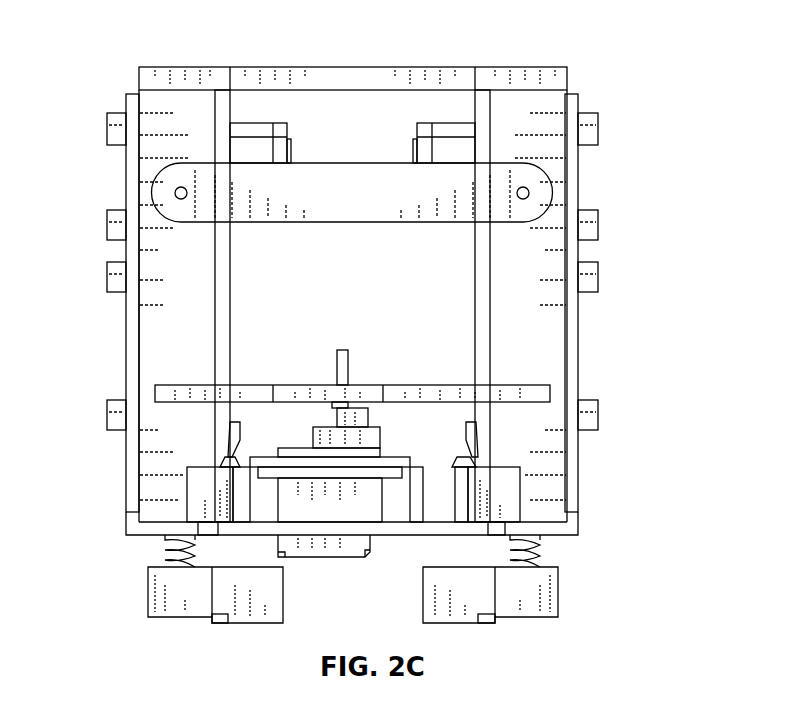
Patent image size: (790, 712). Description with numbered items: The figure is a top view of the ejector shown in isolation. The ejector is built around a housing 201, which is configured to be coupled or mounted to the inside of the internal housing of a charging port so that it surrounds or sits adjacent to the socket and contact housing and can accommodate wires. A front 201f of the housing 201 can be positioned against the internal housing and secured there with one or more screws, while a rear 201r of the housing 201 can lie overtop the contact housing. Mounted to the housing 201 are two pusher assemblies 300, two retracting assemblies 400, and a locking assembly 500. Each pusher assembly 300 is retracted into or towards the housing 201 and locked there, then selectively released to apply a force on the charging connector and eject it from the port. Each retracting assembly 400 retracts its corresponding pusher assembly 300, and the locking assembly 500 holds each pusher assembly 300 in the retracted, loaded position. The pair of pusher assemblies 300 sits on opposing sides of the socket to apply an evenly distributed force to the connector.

The housing 201 is at (162, 152).
The rear of housing 201r is at (355, 67).
The front of housing 201f is at (382, 523).
The retracting assembly 400 is at (162, 308).
The locking assembly 500 is at (368, 393).
The pusher assembly 300 is at (160, 592).